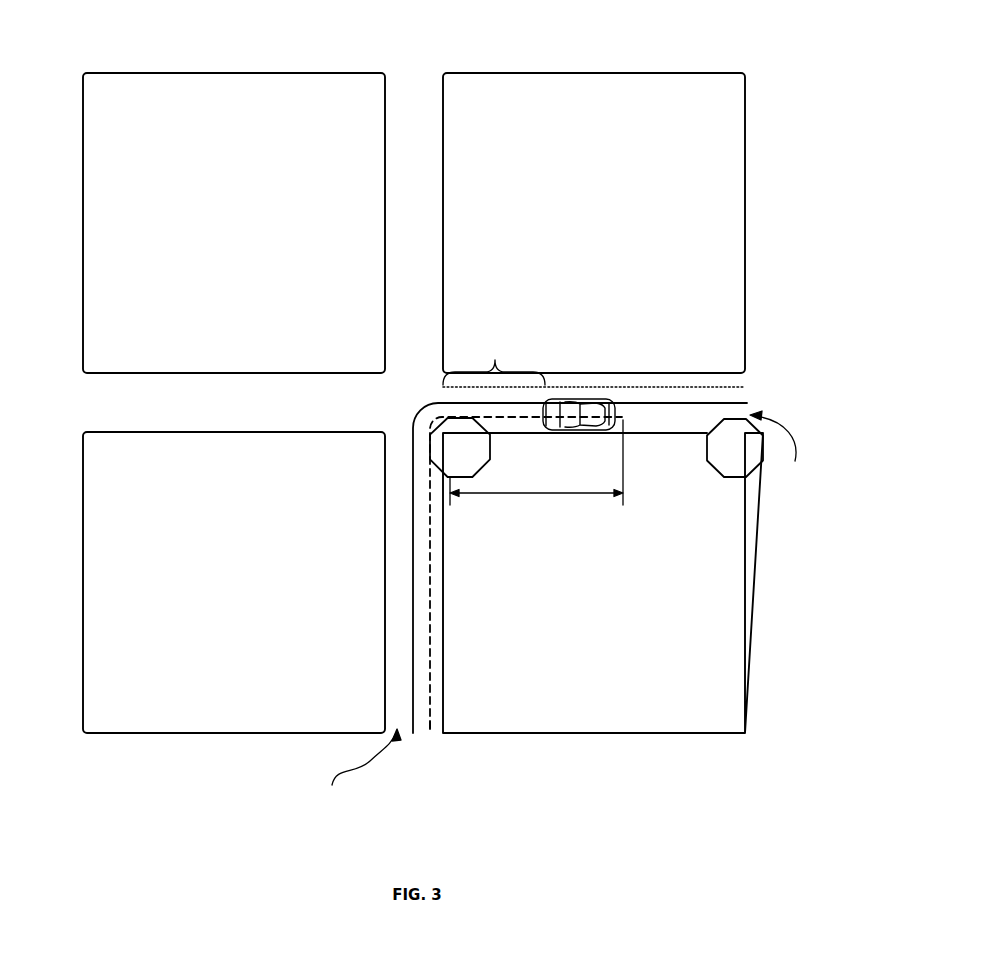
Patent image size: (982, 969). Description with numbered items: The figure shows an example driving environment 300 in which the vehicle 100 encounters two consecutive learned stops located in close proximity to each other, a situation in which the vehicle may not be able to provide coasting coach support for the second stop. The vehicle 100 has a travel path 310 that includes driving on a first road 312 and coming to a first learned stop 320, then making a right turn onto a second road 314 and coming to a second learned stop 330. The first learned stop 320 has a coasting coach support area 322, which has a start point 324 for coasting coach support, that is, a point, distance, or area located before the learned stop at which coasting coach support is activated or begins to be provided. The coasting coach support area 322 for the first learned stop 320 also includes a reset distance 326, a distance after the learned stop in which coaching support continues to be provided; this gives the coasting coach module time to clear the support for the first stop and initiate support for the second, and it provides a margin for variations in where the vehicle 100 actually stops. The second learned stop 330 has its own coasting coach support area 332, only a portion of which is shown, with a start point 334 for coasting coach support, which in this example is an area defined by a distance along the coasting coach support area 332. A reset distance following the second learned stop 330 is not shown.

The driving environment 300 is at (636, 34).
The vehicle 100 is at (566, 402).
The travel path 310 is at (736, 403).
The first road 312 is at (357, 769).
The second road 314 is at (779, 447).
The first learned stop 320 is at (447, 456).
The coasting coach support area 322 is at (431, 571).
The start point 324 is at (430, 729).
The reset distance 326 is at (533, 494).
The second learned stop 330 is at (722, 457).
The coasting coach support area 332 is at (643, 387).
The start point 334 is at (494, 361).